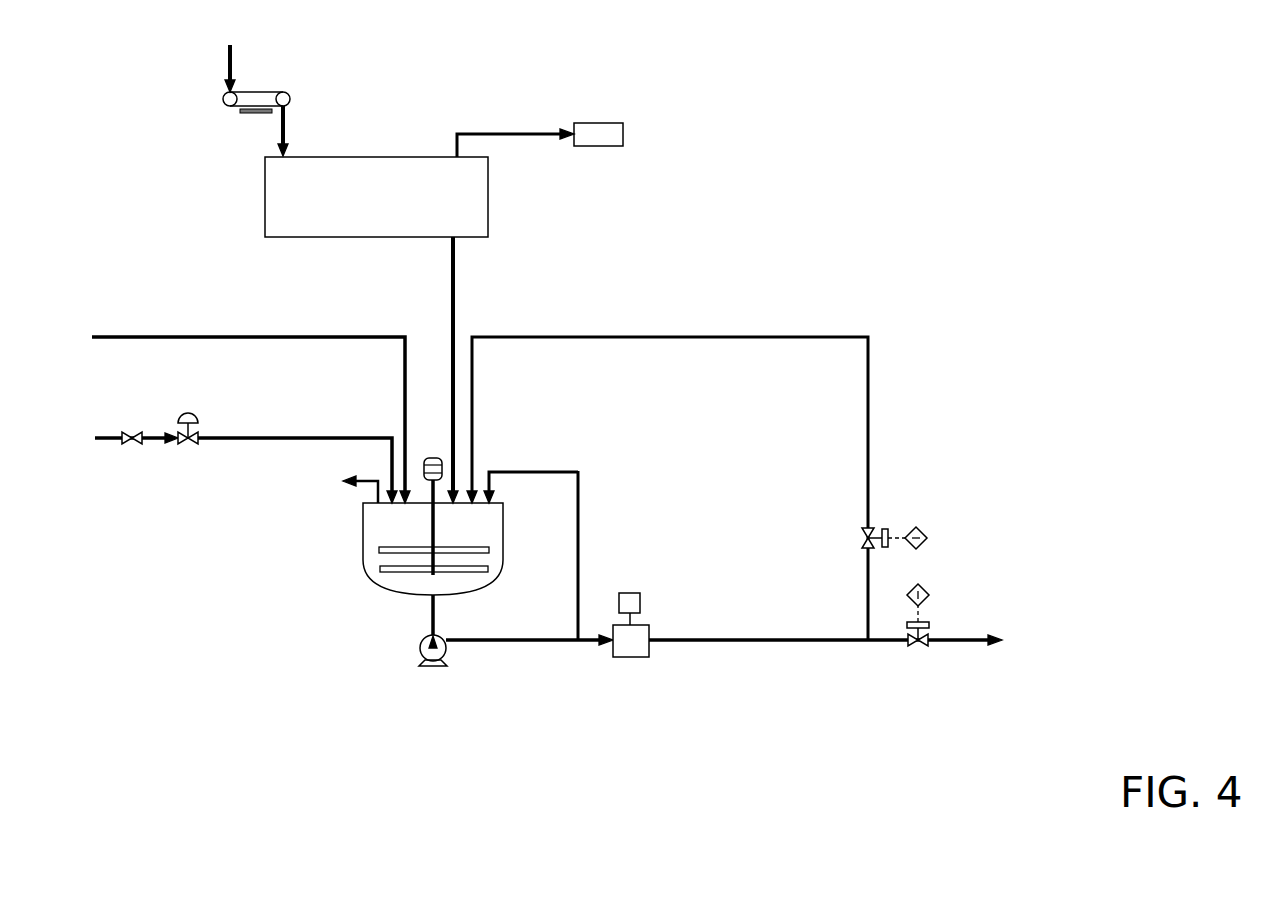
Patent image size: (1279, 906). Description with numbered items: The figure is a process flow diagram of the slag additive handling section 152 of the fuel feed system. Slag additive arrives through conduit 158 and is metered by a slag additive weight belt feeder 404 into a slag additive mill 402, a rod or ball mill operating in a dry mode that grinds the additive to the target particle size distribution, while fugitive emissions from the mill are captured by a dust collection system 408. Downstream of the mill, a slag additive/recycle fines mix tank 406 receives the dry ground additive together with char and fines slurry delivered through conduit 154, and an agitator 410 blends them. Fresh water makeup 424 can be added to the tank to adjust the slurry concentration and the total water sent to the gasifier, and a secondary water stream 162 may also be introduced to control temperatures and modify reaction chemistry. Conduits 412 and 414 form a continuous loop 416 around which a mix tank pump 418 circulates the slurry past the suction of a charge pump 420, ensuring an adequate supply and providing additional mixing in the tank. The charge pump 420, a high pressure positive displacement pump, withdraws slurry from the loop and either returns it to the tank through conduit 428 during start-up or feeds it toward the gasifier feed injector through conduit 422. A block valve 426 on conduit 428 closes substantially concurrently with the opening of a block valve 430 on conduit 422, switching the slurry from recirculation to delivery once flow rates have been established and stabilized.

The slag additive handling section 152 is at (916, 217).
The conduit 154 is at (273, 335).
The conduit 158 is at (226, 64).
The secondary water stream 162 is at (105, 441).
The slag additive mill 402 is at (378, 157).
The slag additive weight belt feeder 404 is at (255, 92).
The slag additive/recycle fines mix tank 406 is at (503, 540).
The dust collection system 408 is at (598, 122).
The agitator 410 is at (432, 455).
The conduit 412 is at (497, 638).
The conduit 414 is at (581, 525).
The continuous loop 416 is at (541, 470).
The mix tank pump 418 is at (422, 647).
The charge pump 420 is at (643, 623).
The conduit 422 is at (958, 638).
The fresh water makeup 424 is at (347, 436).
The block valve 426 is at (868, 530).
The conduit 428 is at (868, 470).
The block valve 430 is at (913, 645).